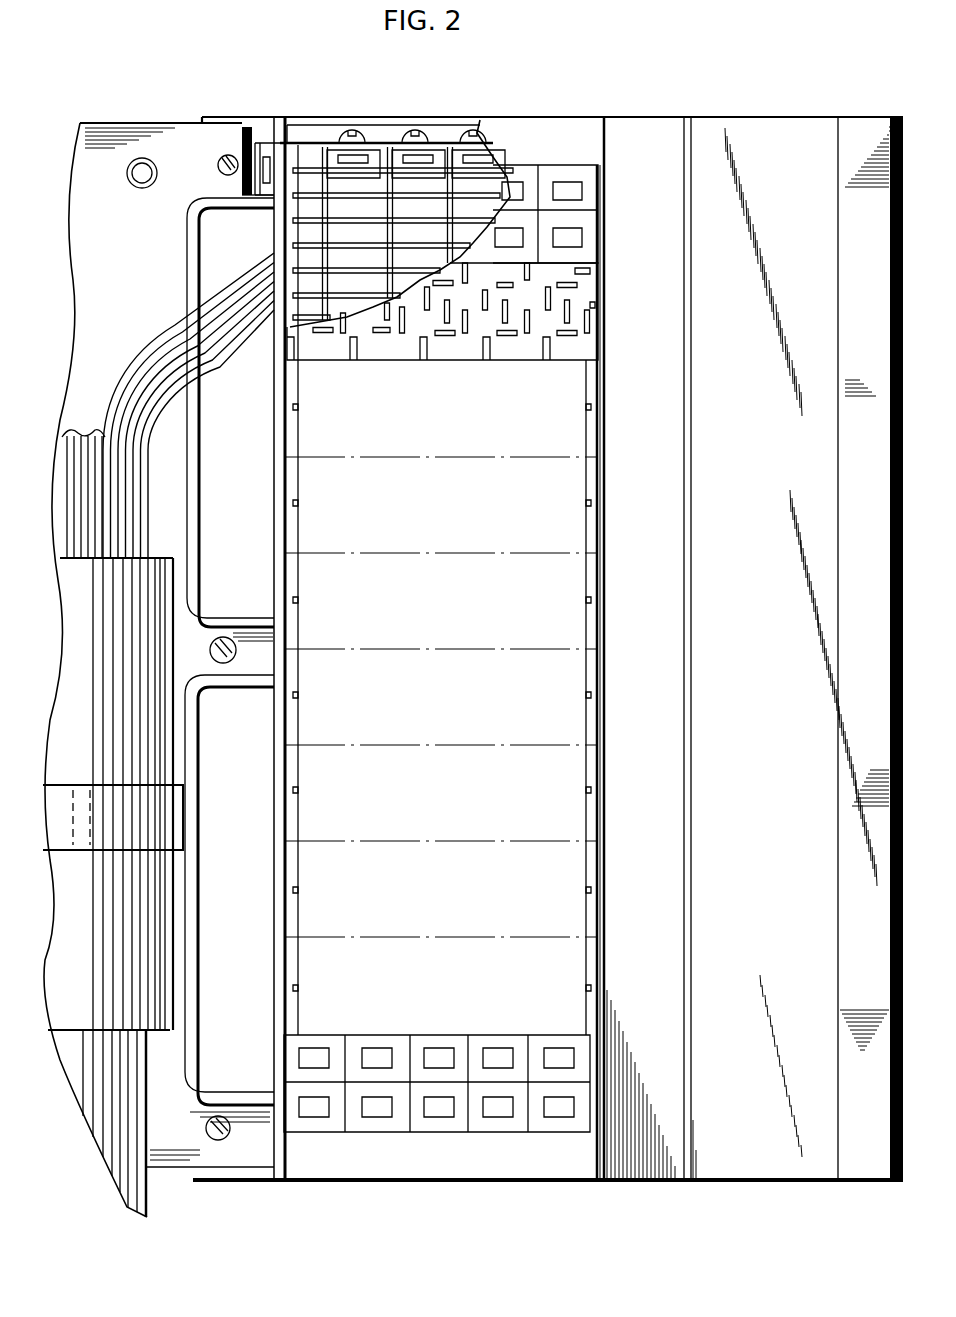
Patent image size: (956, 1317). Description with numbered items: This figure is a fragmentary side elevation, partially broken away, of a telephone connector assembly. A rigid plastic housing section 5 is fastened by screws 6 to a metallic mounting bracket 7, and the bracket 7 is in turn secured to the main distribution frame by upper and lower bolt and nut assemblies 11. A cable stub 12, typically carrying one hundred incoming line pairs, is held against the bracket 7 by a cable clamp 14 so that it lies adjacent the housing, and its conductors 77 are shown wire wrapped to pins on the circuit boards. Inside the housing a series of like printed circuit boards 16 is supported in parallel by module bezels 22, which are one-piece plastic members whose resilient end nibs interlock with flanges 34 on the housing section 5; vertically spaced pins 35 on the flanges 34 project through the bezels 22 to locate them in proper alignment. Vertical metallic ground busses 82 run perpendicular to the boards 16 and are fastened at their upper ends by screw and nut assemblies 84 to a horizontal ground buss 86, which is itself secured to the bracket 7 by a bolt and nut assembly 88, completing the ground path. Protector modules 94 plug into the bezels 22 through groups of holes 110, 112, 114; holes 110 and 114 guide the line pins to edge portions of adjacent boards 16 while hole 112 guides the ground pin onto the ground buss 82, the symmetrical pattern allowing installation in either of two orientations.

The housing section 5 is at (272, 505).
The screws 6 is at (218, 168).
The mounting bracket 7 is at (155, 123).
The bolt and nut assemblies 11 is at (136, 165).
The cable stub 12 is at (125, 1210).
The cable clamp 14 is at (63, 803).
The printed circuit boards 16 is at (501, 170).
The module bezels 22 is at (590, 347).
The flanges 34 is at (298, 436).
The pins 35 is at (594, 305).
The conductors 77 is at (210, 370).
The ground busses 82 is at (454, 216).
The screw and nut assemblies 84 is at (420, 133).
The horizontal ground buss 86 is at (300, 143).
The bolt and nut assembly 88 is at (230, 203).
The protector modules 94 is at (585, 198).
The hole 110 is at (583, 272).
The hole 112 is at (583, 293).
The hole 114 is at (535, 352).